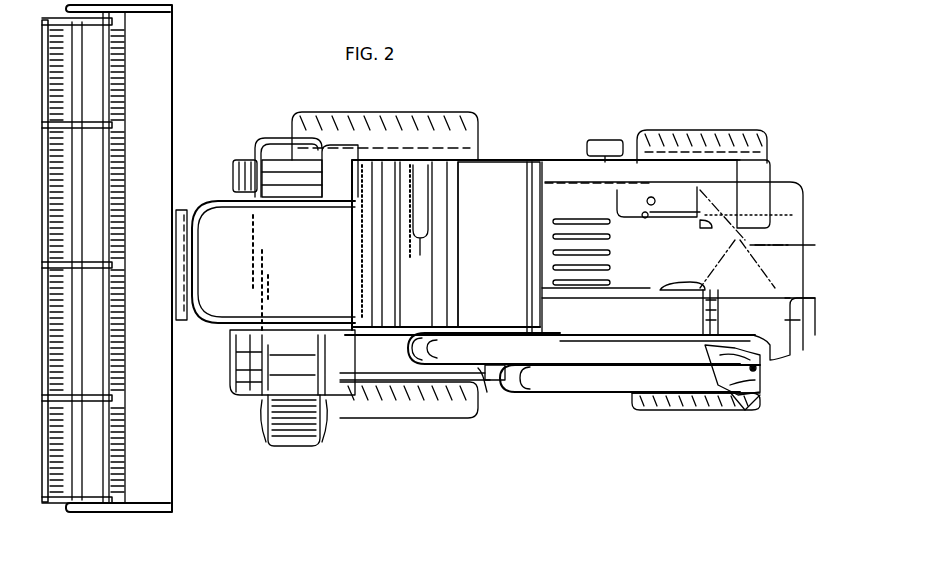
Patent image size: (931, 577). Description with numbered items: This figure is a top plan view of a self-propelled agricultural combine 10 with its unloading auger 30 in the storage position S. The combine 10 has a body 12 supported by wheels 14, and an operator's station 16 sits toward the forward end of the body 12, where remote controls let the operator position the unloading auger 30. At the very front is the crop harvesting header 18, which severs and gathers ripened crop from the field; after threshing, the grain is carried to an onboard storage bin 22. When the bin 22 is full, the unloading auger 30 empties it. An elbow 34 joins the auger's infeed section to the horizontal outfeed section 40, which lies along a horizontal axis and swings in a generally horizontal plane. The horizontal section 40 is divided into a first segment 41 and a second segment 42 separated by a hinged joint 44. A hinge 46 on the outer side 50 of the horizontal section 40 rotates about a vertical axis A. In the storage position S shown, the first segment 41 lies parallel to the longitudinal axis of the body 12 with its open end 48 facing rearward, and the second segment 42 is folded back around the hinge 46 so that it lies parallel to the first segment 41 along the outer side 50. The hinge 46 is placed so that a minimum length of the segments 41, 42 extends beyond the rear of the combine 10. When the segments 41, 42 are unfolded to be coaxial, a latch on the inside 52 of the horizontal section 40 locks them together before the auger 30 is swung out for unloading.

The agricultural combine 10 is at (319, 92).
The body 12 is at (515, 149).
The wheels 14 is at (440, 112).
The operator's station 16 is at (231, 222).
The crop harvesting header 18 is at (132, 525).
The onboard storage bin 22 is at (510, 196).
The unloading auger 30 is at (463, 430).
The elbow 34 is at (440, 357).
The horizontal outfeed section 40 is at (500, 393).
The first segment 41 is at (500, 336).
The second segment 42 is at (598, 384).
The hinged joint 44 is at (786, 389).
The hinge 46 is at (738, 405).
The open end 48 is at (772, 346).
The outer side 50 is at (483, 375).
The inside 52 is at (706, 325).
The storage position S is at (678, 422).
The vertical axis A is at (765, 368).